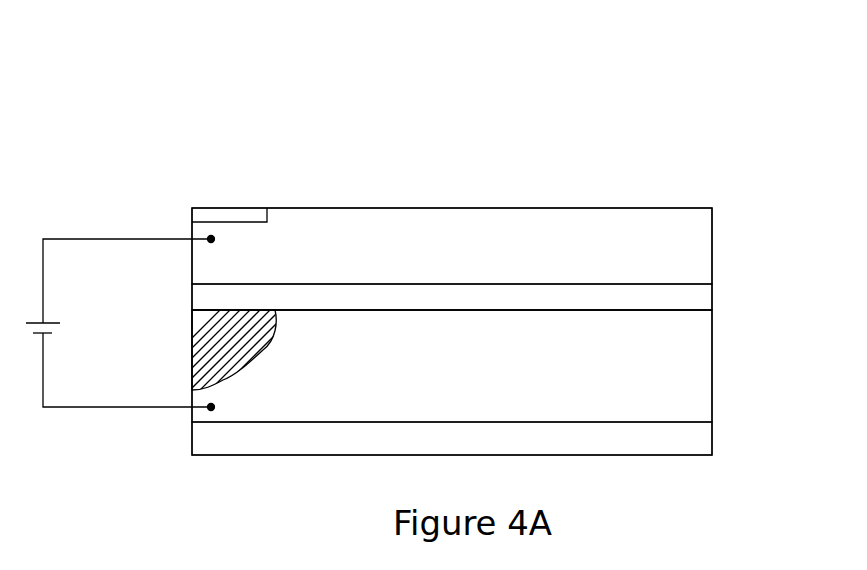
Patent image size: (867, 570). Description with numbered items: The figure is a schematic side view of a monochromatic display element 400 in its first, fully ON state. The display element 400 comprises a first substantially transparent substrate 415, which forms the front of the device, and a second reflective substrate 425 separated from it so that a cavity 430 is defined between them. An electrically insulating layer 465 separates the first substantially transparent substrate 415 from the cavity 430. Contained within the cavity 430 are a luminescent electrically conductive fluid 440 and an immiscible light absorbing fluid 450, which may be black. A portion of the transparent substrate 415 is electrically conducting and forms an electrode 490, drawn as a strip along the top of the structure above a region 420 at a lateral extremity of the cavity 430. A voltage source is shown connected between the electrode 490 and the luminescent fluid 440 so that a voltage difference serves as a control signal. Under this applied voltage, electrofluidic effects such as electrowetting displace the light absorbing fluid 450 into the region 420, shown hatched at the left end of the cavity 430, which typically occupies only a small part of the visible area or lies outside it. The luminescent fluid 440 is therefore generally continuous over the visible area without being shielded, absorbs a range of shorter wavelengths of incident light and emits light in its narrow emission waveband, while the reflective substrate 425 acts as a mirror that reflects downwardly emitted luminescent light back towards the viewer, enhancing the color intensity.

The display element 400 is at (175, 113).
The first substantially transparent substrate 415 is at (700, 245).
The electrically insulating layer 465 is at (700, 298).
The cavity 430 is at (686, 328).
The luminescent electrically conductive fluid 440 is at (690, 382).
The second reflective substrate 425 is at (697, 437).
The electrode 490 is at (245, 213).
The light absorbing fluid 450 is at (192, 342).
The region 420 is at (237, 379).